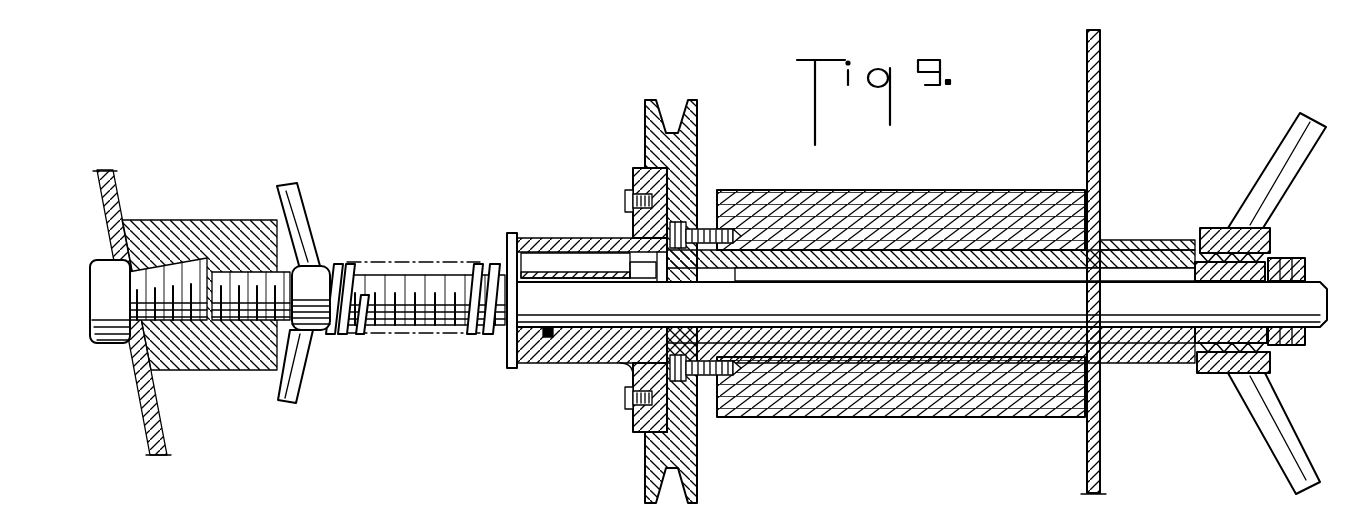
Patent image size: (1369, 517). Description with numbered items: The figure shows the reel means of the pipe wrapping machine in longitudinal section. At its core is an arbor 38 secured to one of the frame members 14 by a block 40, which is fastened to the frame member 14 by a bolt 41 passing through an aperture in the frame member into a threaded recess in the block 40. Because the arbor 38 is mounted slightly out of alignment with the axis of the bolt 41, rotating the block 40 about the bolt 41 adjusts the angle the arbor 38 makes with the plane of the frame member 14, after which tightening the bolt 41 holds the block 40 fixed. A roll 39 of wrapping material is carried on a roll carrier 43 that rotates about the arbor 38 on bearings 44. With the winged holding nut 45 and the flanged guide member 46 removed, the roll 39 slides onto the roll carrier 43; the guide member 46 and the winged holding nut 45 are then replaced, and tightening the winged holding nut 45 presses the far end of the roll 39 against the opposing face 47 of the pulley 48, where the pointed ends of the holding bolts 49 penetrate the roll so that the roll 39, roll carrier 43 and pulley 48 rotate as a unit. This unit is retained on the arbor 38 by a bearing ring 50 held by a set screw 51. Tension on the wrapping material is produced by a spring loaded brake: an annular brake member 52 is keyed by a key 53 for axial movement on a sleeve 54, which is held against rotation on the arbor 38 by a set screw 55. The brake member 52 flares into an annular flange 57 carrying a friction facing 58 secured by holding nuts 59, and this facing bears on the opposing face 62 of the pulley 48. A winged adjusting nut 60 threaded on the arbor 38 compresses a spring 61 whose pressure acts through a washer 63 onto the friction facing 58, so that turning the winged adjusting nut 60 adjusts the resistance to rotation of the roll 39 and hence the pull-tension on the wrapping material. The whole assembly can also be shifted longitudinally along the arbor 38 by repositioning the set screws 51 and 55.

The frame member 14 is at (118, 189).
The block 40 is at (200, 220).
The bolt 41 is at (104, 323).
The winged adjusting nut 60 is at (318, 272).
The compressed spring 61 is at (358, 340).
The washer 63 is at (507, 362).
The annular brake member 52 is at (535, 238).
The key 53 is at (581, 258).
The sleeve 54 is at (590, 336).
The set screw 55 is at (547, 338).
The annular flange 57 is at (634, 173).
The friction facing 58 is at (636, 432).
The holding nuts 59 is at (629, 405).
The pulley 48 is at (645, 133).
The opposing face 62 is at (668, 178).
The holding bolts 49 is at (707, 222).
The opposing face 47 is at (712, 385).
The roll 39 is at (895, 190).
The roll carrier 43 is at (1157, 255).
The bearings 44 is at (728, 272).
The flanged guide member 46 is at (1101, 166).
The winged holding nut 45 is at (1255, 238).
The bearing ring 50 is at (1297, 347).
The set screw 51 is at (1285, 257).
The arbor 38 is at (1300, 289).